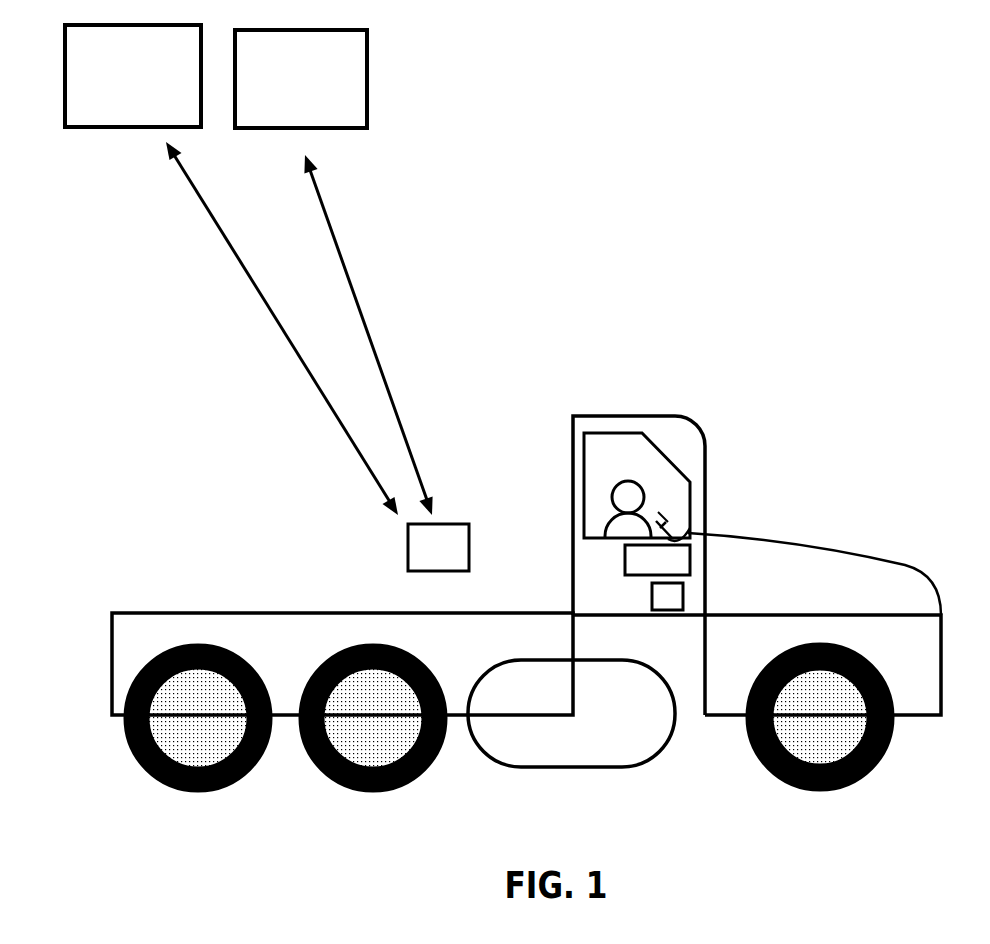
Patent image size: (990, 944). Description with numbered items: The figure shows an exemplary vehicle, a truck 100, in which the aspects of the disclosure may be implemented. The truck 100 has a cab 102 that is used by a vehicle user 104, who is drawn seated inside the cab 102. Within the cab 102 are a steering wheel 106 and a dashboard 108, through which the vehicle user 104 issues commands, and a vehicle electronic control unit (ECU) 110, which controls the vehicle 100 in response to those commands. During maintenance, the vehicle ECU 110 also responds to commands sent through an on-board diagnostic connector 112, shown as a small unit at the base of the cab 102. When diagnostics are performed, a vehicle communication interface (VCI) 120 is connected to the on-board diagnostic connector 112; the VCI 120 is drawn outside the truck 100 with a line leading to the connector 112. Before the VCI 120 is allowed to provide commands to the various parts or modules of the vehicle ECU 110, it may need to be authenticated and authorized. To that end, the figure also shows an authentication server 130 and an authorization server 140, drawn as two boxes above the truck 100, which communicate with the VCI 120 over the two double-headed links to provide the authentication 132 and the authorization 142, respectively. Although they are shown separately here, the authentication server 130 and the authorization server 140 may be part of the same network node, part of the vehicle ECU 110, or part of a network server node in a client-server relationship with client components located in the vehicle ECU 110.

The truck 100 is at (800, 398).
The cab 102 is at (672, 433).
The vehicle user 104 is at (600, 507).
The steering wheel 106 is at (668, 494).
The dashboard 108 is at (696, 532).
The vehicle electronic control unit (ECU) 110 is at (657, 560).
The on-board diagnostic connector 112 is at (685, 598).
The vehicle communication interface (VCI) 120 is at (628, 597).
The authentication server 130 is at (133, 76).
The authentication 132 is at (210, 333).
The authorization server 140 is at (301, 79).
The authorization 142 is at (372, 263).